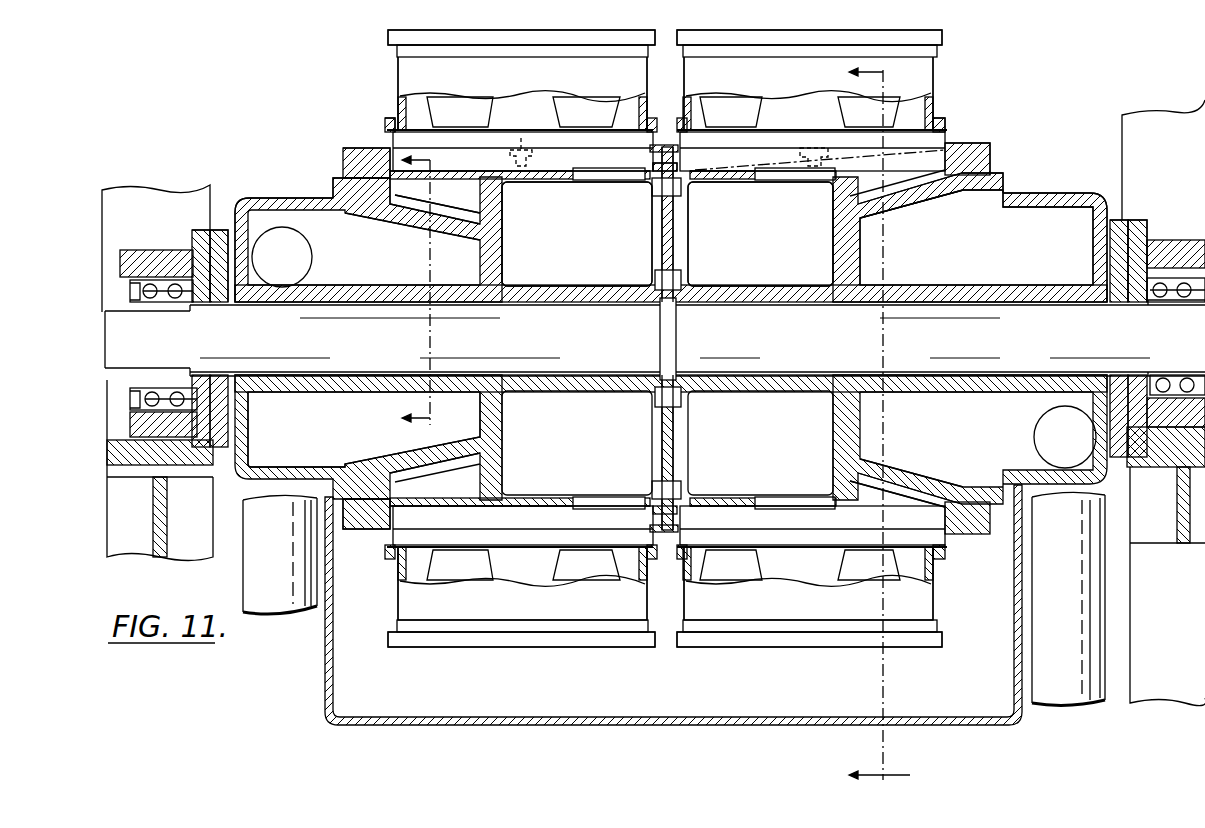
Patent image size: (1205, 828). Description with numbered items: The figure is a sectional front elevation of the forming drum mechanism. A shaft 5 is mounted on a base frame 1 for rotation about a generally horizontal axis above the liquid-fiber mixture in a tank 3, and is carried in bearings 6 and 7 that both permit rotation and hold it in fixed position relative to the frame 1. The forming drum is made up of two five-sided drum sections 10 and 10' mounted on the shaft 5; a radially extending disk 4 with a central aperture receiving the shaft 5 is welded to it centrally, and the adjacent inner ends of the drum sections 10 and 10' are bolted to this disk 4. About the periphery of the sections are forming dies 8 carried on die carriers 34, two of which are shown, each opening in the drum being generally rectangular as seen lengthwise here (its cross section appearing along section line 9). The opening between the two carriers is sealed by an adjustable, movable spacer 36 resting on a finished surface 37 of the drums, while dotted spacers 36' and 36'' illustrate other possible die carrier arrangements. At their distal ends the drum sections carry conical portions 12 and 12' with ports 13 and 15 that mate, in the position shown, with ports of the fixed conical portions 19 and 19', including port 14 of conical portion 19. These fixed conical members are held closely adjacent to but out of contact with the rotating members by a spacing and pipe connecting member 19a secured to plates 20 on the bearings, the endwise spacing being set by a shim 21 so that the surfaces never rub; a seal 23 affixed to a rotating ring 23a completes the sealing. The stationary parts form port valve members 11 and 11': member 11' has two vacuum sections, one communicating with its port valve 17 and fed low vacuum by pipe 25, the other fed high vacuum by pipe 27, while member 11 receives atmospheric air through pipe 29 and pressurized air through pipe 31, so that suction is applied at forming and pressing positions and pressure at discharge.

The base frame 1 is at (107, 540).
The tank 3 is at (470, 730).
The radially extending disk 4 is at (661, 247).
The shaft 5 is at (754, 344).
The bearing 6 is at (1203, 250).
The bearing 7 is at (190, 262).
The forming dies 8 is at (560, 98).
The section line 9- 9 is at (879, 440).
The drum section 10 is at (527, 300).
The drum section 10' is at (760, 234).
The port valve member 11 is at (345, 184).
The port valve member 11' is at (1002, 167).
The conical portion 12 is at (411, 491).
The conical portion 12' is at (910, 195).
The port 13 is at (446, 214).
The port 14 is at (421, 220).
The port 15 is at (902, 473).
The port valve 17 is at (897, 455).
The conical portion 19 is at (364, 429).
The conical portion 19' is at (976, 237).
The spacing and pipe connecting member 19a is at (288, 197).
The plate 20 is at (200, 230).
The shim 21 is at (228, 228).
The seal 23 is at (355, 150).
The rotating ring 23a is at (343, 152).
The pipe 25 is at (1043, 432).
The pipe 27 is at (1058, 697).
The pipe 29 is at (280, 228).
The pipe 31 is at (283, 597).
The die carrier 34 is at (392, 68).
The spacer 36 is at (686, 135).
The spacer 36' is at (820, 135).
The spacer 36'' is at (521, 133).
The finished surface 37 is at (558, 177).